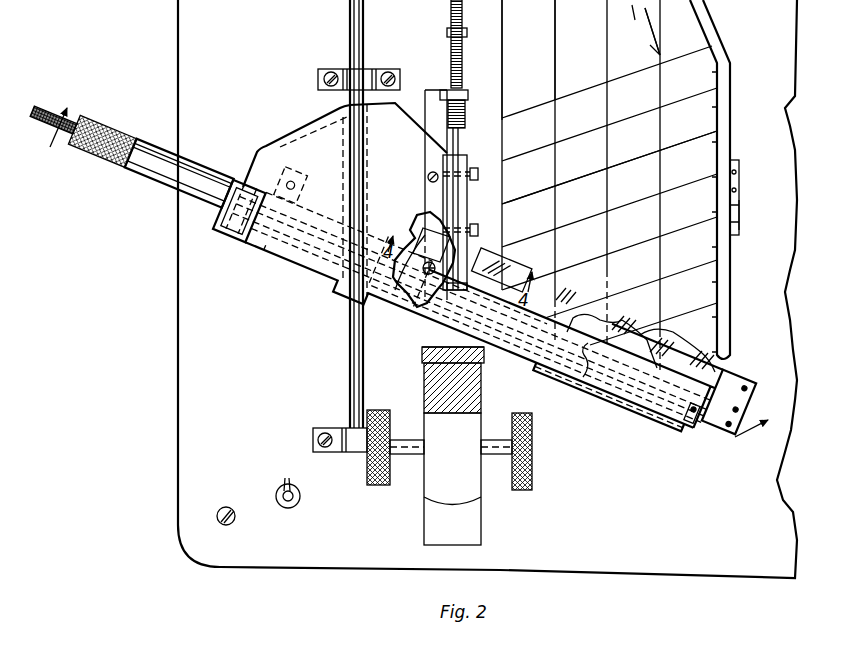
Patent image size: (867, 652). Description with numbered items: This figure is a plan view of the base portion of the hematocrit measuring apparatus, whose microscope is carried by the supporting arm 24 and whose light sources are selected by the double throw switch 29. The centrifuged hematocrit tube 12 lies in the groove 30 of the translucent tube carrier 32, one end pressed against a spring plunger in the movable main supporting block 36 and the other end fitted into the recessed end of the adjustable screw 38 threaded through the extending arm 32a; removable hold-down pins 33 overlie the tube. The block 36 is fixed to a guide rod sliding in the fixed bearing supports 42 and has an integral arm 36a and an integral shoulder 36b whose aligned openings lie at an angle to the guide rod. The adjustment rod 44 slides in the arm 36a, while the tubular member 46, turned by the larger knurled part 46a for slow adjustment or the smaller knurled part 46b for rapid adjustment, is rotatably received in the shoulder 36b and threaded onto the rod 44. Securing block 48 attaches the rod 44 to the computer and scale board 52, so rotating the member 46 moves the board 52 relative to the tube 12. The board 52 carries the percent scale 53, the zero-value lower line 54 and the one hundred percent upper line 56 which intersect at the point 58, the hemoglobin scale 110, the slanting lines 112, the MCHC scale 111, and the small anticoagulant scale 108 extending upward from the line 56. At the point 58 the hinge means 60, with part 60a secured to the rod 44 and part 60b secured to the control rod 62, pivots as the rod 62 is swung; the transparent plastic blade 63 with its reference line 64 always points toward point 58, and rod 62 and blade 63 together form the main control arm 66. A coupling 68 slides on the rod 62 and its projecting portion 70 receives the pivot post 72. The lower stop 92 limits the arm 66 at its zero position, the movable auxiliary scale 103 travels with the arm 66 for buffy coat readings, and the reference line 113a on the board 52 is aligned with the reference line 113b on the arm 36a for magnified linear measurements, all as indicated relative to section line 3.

The section line 3- 3 is at (405, 287).
The hematocrit tube 12 is at (458, 142).
The supporting arm 24 is at (453, 446).
The double throw switch 29 is at (286, 480).
The groove 30 is at (534, 438).
The tube carrier 32 is at (468, 162).
The extending arm 32a is at (462, 92).
The hold-down pins 33 is at (481, 174).
The main supporting block 36 is at (400, 117).
The arm 36a is at (660, 413).
The shoulder 36b is at (241, 238).
The adjustable screw 38 is at (466, 114).
The bearing supports 42 is at (330, 68).
The adjustment rod 44 is at (441, 347).
The tubular member 46 is at (201, 180).
The larger knurled part 46a is at (105, 127).
The smaller knurled part 46b is at (36, 110).
The securing block 48 is at (696, 414).
The computer and scale board 52 is at (705, 195).
The percent scale 53 is at (725, 52).
The lower line 54 is at (627, 343).
The upper line 56 is at (548, 98).
The point 58 is at (300, 196).
The hinge means 60 is at (272, 176).
The hinge part 60a is at (282, 255).
The hinge part 60b is at (282, 143).
The control rod 62 is at (390, 232).
The transparent plastic blade 63 is at (663, 334).
The reference line 64 is at (702, 352).
The main control arm 66 is at (733, 375).
The coupling 68 is at (440, 222).
The projecting portion 70 is at (420, 280).
The pivot post 72 is at (428, 276).
The lower stop 92 is at (738, 418).
The auxiliary scale 103 is at (741, 212).
The small scale 108 is at (638, 27).
The hemoglobin scale 110 is at (513, 84).
The MCHC scale 111 is at (556, 68).
The slanting lines 112 is at (577, 236).
The reference line 113a is at (573, 317).
The reference line 113b is at (583, 377).